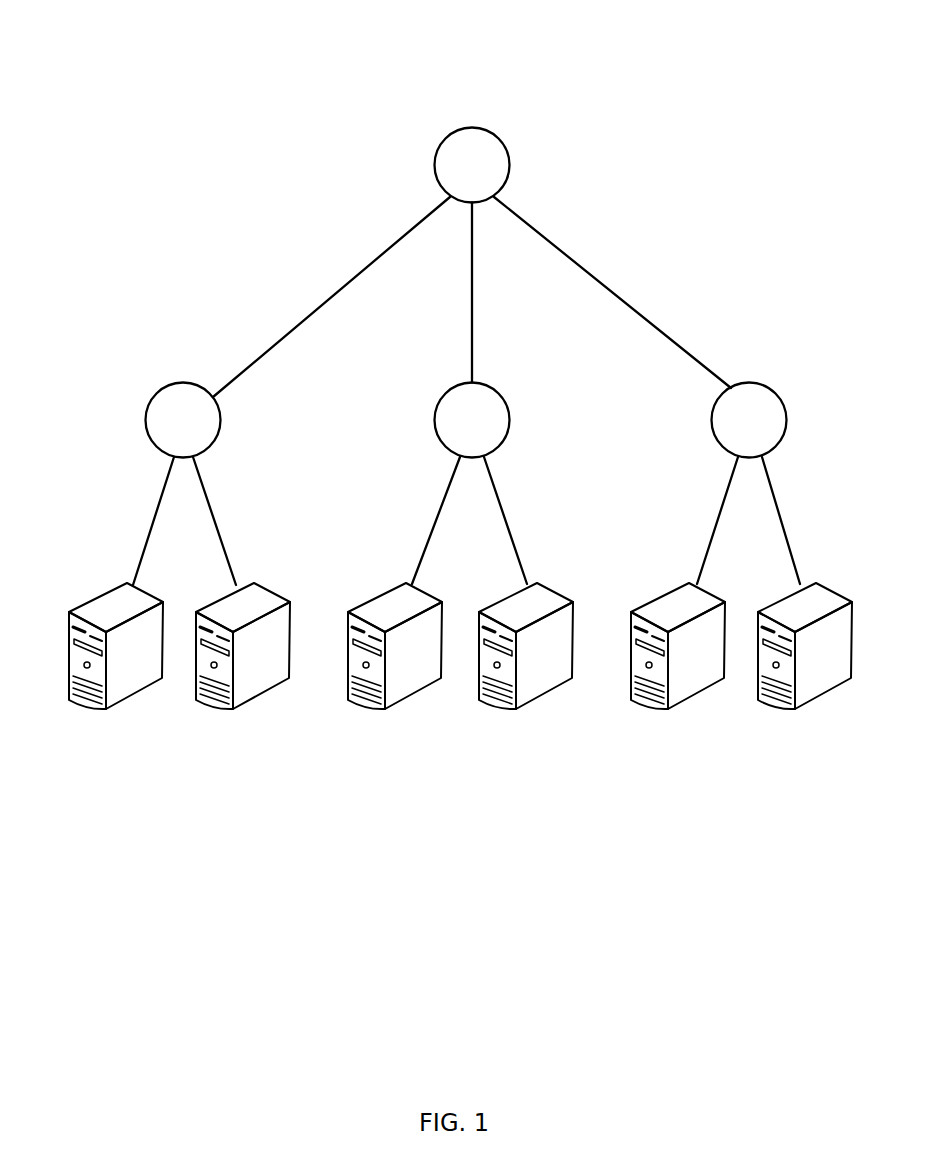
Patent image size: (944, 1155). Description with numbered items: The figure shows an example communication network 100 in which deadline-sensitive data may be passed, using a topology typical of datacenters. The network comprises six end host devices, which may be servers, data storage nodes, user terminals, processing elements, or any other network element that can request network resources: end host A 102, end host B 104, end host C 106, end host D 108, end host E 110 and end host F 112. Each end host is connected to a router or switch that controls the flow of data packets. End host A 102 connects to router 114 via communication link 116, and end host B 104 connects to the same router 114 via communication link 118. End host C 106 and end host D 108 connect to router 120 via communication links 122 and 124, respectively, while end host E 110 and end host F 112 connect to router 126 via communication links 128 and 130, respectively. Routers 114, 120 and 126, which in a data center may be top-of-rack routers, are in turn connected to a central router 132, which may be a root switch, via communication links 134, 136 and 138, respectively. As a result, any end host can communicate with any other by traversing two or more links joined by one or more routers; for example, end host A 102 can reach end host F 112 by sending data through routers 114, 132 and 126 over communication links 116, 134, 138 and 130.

The communication network 100 is at (733, 80).
The end host A 102 is at (112, 590).
The end host B 104 is at (262, 587).
The end host C 106 is at (403, 584).
The end host D 108 is at (541, 586).
The end host E 110 is at (685, 585).
The end host F 112 is at (833, 592).
The router 114 is at (155, 395).
The communication link 116 is at (152, 521).
The communication link 118 is at (218, 520).
The router 120 is at (437, 407).
The communication link 122 is at (437, 520).
The communication link 124 is at (500, 519).
The router 126 is at (715, 410).
The communication link 128 is at (718, 519).
The communication link 130 is at (783, 518).
The central router 132 is at (507, 143).
The communication link 134 is at (340, 292).
The communication link 136 is at (473, 303).
The communication link 138 is at (610, 290).